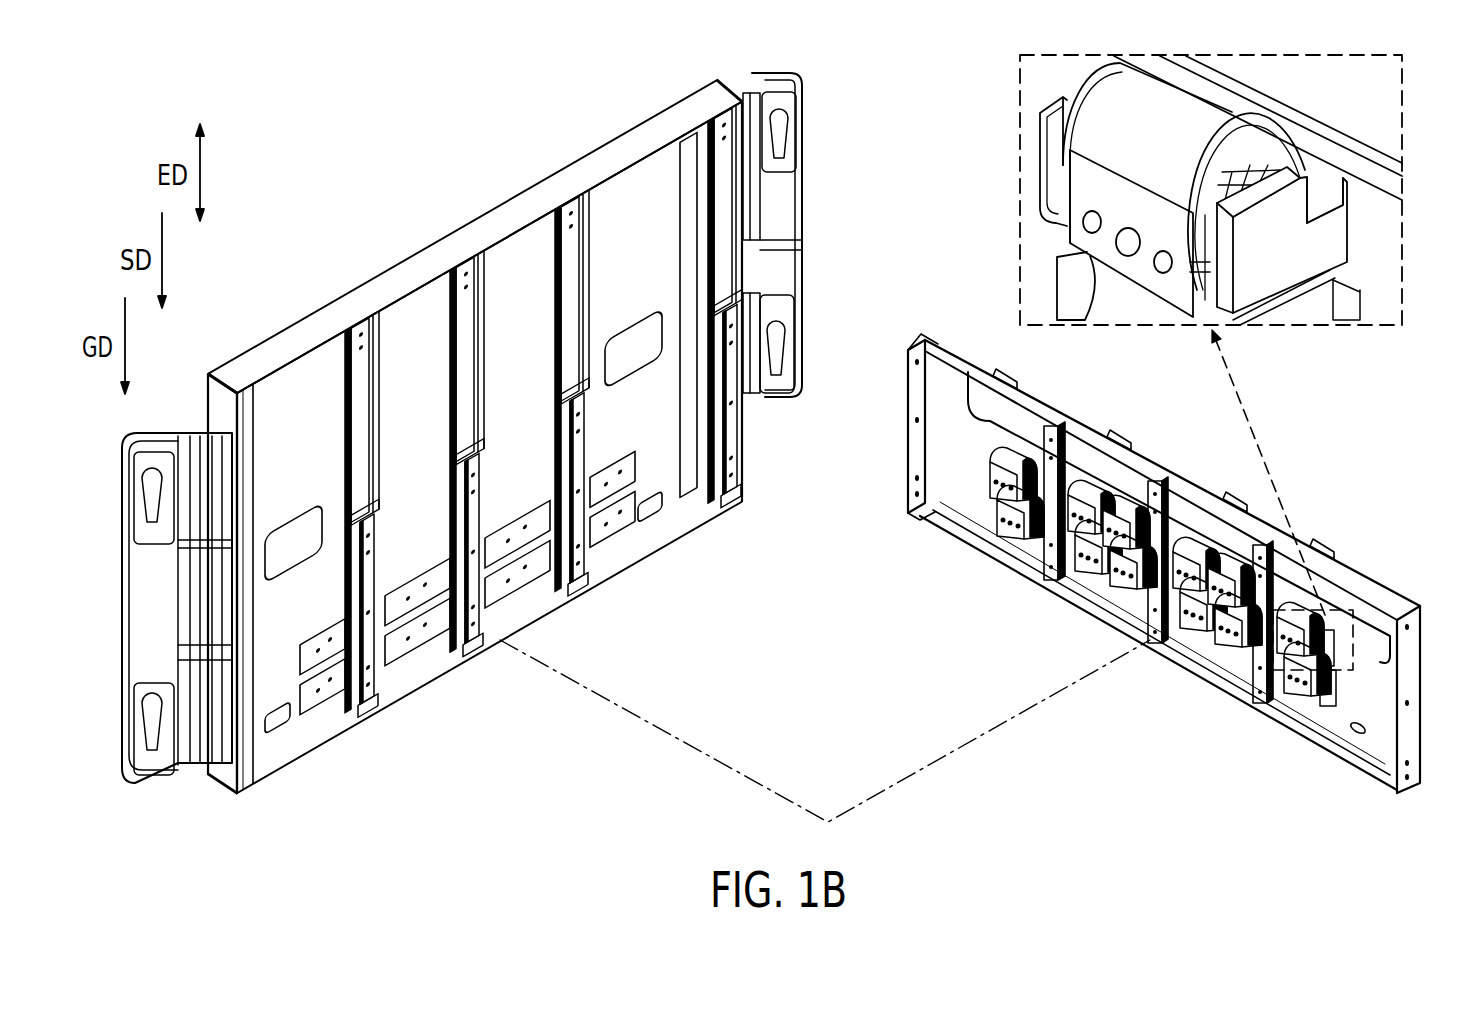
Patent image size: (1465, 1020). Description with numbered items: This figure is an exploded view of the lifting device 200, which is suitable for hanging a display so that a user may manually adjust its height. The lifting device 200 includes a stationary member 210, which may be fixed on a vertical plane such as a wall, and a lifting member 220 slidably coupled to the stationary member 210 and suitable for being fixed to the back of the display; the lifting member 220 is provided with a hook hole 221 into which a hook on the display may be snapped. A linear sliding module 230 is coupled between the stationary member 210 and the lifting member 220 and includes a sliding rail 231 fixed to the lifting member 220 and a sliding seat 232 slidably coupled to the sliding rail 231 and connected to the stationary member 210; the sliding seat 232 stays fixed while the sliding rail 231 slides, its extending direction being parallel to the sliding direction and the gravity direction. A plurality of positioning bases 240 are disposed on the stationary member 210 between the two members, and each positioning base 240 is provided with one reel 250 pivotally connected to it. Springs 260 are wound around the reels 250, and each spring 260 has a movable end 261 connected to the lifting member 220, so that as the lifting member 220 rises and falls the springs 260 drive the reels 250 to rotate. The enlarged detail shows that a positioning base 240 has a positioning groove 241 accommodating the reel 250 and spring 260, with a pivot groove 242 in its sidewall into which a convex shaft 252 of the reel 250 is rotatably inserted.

The lifting device 200 is at (774, 448).
The stationary member 210 is at (1383, 743).
The lifting member 220 is at (298, 373).
The hook hole 221 is at (142, 476).
The linear sliding module 230 is at (631, 415).
The sliding rail 231 is at (472, 267).
The sliding seat 232 is at (723, 433).
The positioning base 240 is at (1040, 517).
The positioning groove 241 is at (1215, 270).
The pivot groove 242 is at (1310, 208).
The reel 250 is at (1272, 152).
The convex shaft 252 is at (1220, 160).
The spring 260 is at (1160, 113).
The movable end 261 is at (1087, 247).